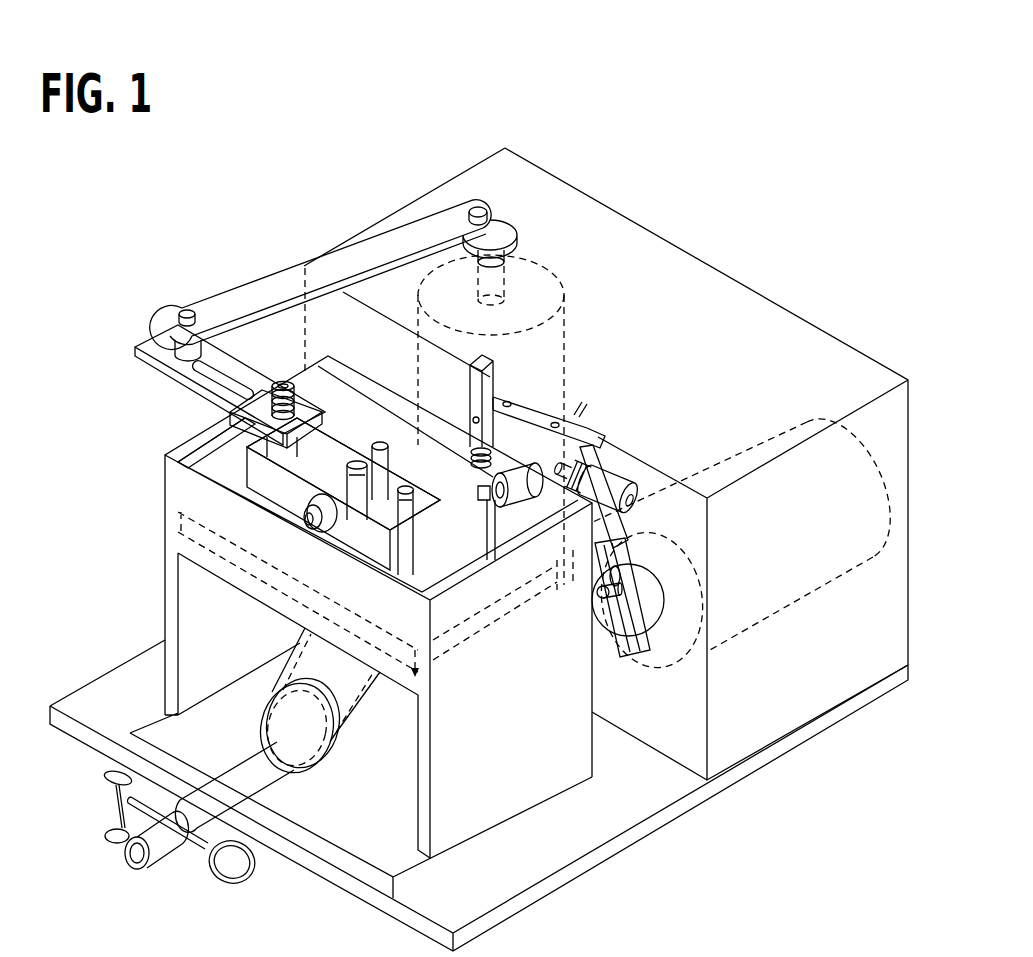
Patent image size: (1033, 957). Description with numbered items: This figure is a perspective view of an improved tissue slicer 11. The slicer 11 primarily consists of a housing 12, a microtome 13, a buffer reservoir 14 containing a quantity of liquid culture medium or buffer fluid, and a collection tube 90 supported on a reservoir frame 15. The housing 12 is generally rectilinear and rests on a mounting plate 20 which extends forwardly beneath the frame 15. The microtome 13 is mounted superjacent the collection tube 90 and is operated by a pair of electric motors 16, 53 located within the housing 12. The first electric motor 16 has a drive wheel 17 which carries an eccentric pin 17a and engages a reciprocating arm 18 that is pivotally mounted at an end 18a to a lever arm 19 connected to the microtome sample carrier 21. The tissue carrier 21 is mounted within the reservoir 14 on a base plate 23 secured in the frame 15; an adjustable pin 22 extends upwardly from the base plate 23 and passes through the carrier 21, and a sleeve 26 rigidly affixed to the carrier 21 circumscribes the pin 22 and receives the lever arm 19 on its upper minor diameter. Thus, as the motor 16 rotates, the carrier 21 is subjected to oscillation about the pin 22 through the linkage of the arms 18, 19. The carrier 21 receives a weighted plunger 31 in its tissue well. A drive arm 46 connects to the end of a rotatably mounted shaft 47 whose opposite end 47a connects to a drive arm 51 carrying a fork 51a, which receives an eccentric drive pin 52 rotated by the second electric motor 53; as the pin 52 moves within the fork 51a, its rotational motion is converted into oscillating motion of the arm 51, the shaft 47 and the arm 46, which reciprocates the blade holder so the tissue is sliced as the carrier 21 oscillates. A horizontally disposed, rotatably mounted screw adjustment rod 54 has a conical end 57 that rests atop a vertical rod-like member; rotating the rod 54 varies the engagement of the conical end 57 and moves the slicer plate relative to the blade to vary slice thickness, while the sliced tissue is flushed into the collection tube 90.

The tissue slicer 11 is at (497, 128).
The housing 12 is at (682, 280).
The microtome 13 is at (342, 428).
The buffer reservoir 14 is at (212, 452).
The reservoir frame 15 is at (188, 603).
The first electric motor 16 is at (562, 362).
The drive wheel 17 is at (512, 228).
The eccentric pin 17a is at (477, 207).
The reciprocating arm 18 is at (217, 302).
The end of reciprocating arm 18a is at (182, 312).
The lever arm 19 is at (140, 362).
The mounting plate 20 is at (122, 675).
The tissue carrier 21 is at (280, 488).
The adjustable pin 22 is at (283, 382).
The base plate 23 is at (185, 538).
The sleeve 26 is at (237, 434).
The weighted plunger 31 is at (380, 444).
The drive arm 46 is at (492, 555).
The shaft 47 is at (487, 497).
The opposite end of shaft 47a is at (590, 437).
The drive arm 51 is at (628, 530).
The fork 51a is at (619, 658).
The eccentric drive pin 52 is at (602, 594).
The second electric motor 53 is at (808, 595).
The screw adjustment rod 54 is at (625, 470).
The conical end 57 is at (474, 410).
The collection tube 90 is at (362, 716).